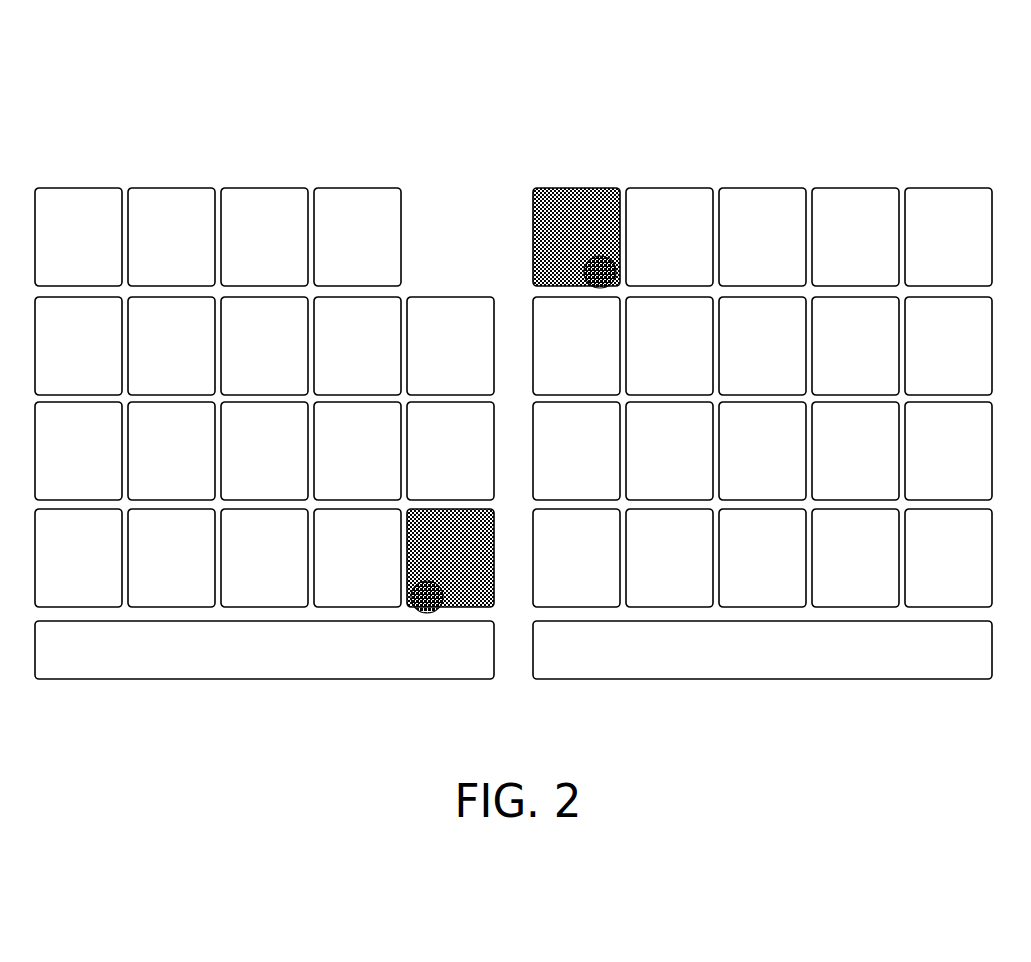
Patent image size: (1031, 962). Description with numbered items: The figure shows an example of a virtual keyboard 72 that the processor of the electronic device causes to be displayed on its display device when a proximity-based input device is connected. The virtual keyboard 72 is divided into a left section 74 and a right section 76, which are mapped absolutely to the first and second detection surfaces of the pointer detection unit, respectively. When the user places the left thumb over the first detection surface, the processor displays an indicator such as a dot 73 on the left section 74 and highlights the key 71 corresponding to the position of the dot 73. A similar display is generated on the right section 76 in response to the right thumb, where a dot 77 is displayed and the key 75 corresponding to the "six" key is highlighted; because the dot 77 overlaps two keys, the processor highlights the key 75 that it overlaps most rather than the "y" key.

The key 71 is at (491, 594).
The virtual keyboard 72 is at (784, 98).
The dot 73 is at (427, 608).
The left section 74 is at (332, 178).
The key 75 is at (545, 195).
The right section 76 is at (878, 178).
The dot 77 is at (600, 262).